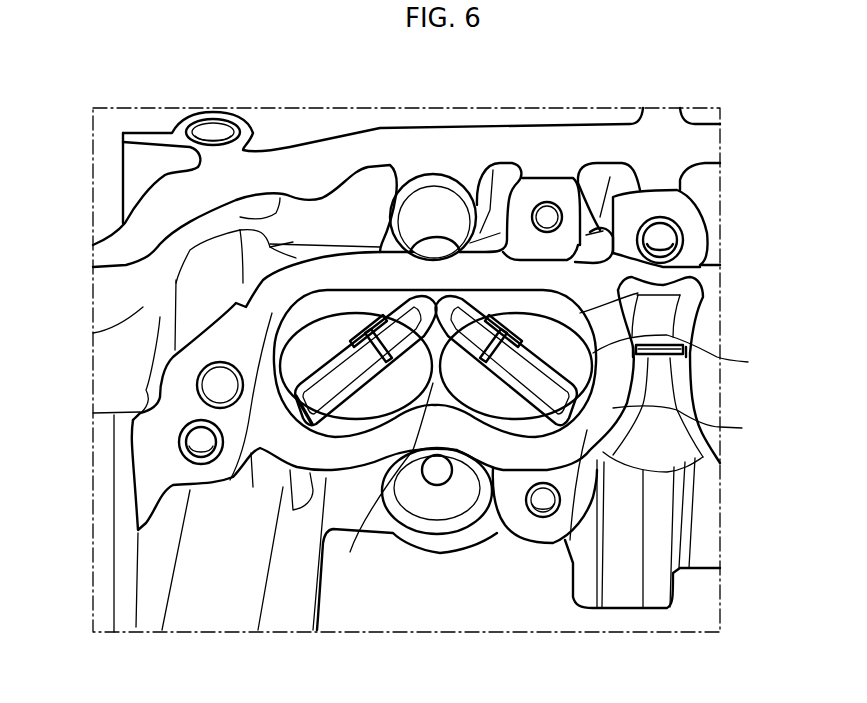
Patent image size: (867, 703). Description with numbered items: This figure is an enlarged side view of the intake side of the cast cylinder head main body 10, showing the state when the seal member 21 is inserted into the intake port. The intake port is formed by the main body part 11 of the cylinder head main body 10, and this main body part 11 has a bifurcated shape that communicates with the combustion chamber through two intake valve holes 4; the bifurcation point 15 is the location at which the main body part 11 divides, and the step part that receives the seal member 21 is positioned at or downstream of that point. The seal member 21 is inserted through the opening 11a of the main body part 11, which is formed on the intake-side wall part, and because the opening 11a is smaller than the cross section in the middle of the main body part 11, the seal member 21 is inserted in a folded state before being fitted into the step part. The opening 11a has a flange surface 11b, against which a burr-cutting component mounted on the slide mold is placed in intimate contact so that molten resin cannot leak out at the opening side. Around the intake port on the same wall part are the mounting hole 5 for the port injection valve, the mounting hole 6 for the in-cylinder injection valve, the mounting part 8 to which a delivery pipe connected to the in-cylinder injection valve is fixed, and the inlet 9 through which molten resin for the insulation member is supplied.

The cylinder head main body 10 is at (104, 164).
The mounting hole for the port injection valve 5 is at (437, 188).
The seal member 21 is at (352, 307).
The main body part 11 is at (262, 333).
The opening of the main body part 11a is at (703, 300).
The flange surface 11b is at (699, 407).
The intake valve hole 4 is at (298, 397).
The bifurcation point 15 is at (407, 506).
The mounting hole of the in-cylinder injection valve 6 is at (439, 522).
The mounting part 8 is at (533, 537).
The inlet 9 is at (618, 612).